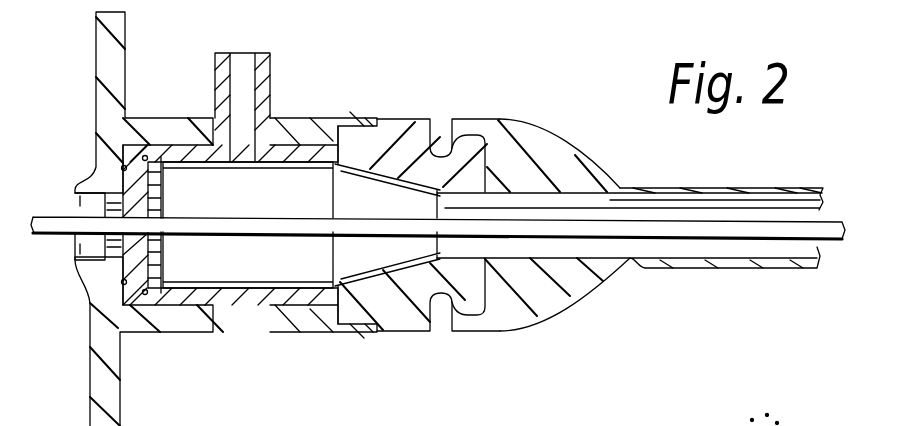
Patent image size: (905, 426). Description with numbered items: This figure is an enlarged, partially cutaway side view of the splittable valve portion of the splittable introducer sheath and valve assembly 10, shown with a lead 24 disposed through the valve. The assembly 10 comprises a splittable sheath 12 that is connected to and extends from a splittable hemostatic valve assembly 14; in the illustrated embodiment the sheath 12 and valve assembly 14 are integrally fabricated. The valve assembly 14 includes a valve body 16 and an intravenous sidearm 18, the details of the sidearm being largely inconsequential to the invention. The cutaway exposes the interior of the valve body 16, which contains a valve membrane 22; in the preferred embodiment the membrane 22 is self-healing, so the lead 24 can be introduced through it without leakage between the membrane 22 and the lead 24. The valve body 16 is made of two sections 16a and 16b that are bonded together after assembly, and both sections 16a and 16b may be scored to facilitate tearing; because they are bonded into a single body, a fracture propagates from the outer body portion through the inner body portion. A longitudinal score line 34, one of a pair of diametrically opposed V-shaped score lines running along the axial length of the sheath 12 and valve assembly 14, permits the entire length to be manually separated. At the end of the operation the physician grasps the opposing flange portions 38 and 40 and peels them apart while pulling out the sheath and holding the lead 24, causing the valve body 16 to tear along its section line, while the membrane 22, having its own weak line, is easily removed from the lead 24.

The splittable introducer sheath and valve assembly 10 is at (577, 73).
The splittable sheath 12 is at (727, 425).
The splittable hemostatic valve assembly 14 is at (388, 116).
The valve body 16 is at (170, 116).
The valve body section 16a is at (320, 122).
The valve body section 16b is at (422, 122).
The intravenous sidearm 18 is at (270, 72).
The valve membrane 22 is at (133, 277).
The lead 24 is at (59, 165).
The longitudinal score line 34 is at (682, 425).
The flange portion 38 is at (120, 387).
The flange portion 40 is at (97, 66).